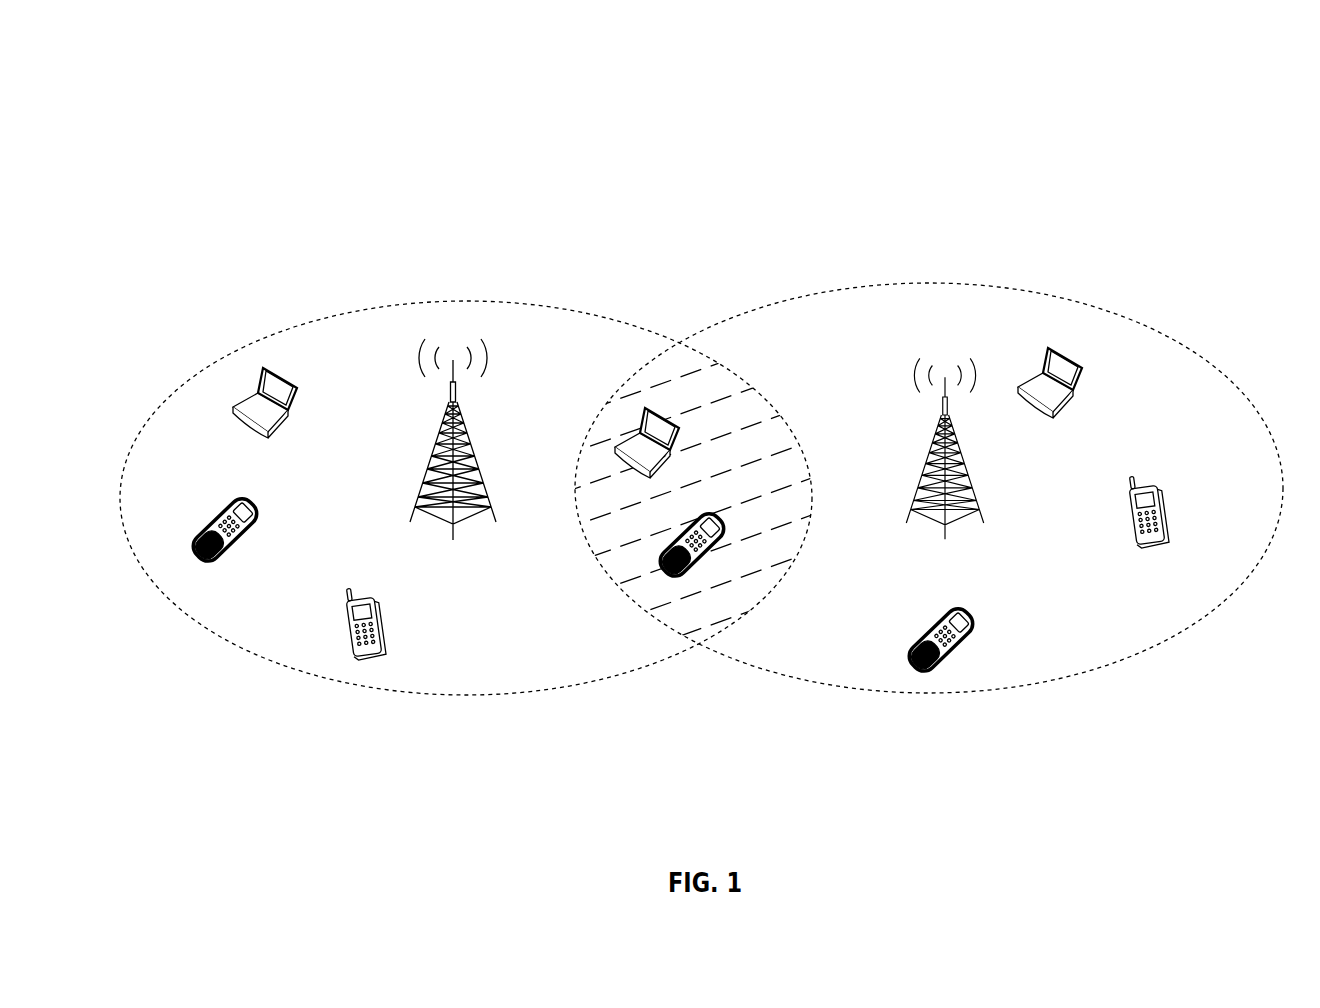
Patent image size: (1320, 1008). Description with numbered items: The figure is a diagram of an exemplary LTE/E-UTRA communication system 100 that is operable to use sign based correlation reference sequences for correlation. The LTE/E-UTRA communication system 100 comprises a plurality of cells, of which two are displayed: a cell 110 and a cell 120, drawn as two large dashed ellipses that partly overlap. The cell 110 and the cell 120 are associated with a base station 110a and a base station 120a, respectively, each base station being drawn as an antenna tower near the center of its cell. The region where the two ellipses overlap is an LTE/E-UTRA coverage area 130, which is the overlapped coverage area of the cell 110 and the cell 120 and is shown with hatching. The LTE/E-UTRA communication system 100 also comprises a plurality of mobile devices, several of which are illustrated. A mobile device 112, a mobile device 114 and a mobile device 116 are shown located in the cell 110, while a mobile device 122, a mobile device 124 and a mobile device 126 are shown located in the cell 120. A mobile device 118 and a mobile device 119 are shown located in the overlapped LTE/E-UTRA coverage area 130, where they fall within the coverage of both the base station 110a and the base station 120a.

The LTE/E-UTRA communication system 100 is at (378, 86).
The cell 110 is at (560, 306).
The base station 110a is at (487, 362).
The mobile device 112 is at (300, 390).
The mobile device 114 is at (253, 523).
The mobile device 116 is at (382, 635).
The mobile device 118 is at (716, 550).
The mobile device 119 is at (684, 457).
The cell 120 is at (998, 291).
The base station 120a is at (980, 377).
The mobile device 122 is at (1087, 368).
The mobile device 124 is at (1165, 522).
The mobile device 126 is at (962, 636).
The LTE/E-UTRA coverage area 130 is at (666, 347).